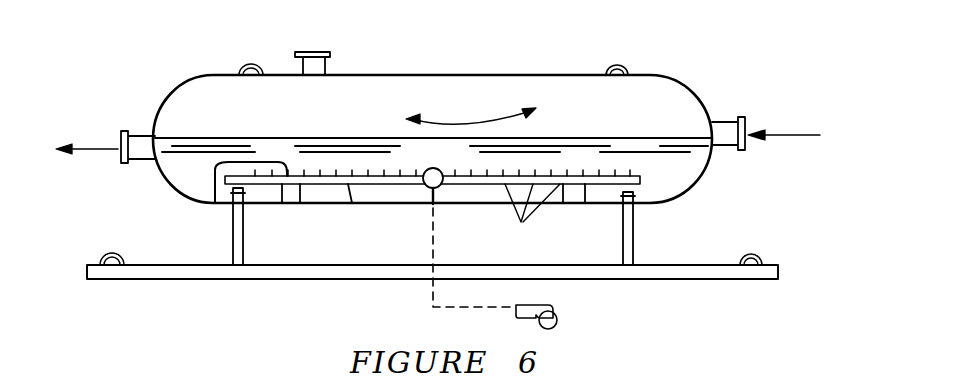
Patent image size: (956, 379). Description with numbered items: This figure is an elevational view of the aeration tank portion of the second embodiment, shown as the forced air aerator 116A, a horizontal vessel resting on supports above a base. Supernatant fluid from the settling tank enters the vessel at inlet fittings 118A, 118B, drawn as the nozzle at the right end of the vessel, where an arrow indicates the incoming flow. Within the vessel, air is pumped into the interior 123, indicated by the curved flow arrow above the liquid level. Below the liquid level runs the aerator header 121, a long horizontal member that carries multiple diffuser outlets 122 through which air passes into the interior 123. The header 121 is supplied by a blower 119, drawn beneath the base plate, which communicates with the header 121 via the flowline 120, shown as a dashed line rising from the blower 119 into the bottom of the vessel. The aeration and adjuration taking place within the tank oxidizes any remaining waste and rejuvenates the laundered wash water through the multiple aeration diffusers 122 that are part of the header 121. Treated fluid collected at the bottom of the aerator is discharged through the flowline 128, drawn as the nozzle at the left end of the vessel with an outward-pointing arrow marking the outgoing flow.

The forced air aerator 116A is at (420, 75).
The inlet fitting 118A is at (756, 109).
The inlet fitting 118B is at (731, 120).
The flowline 128 is at (136, 162).
The interior 123 is at (471, 112).
The aerator header 121 is at (352, 206).
The diffuser outlets 122 is at (214, 203).
The flowline 120 is at (432, 300).
The blower 119 is at (556, 312).